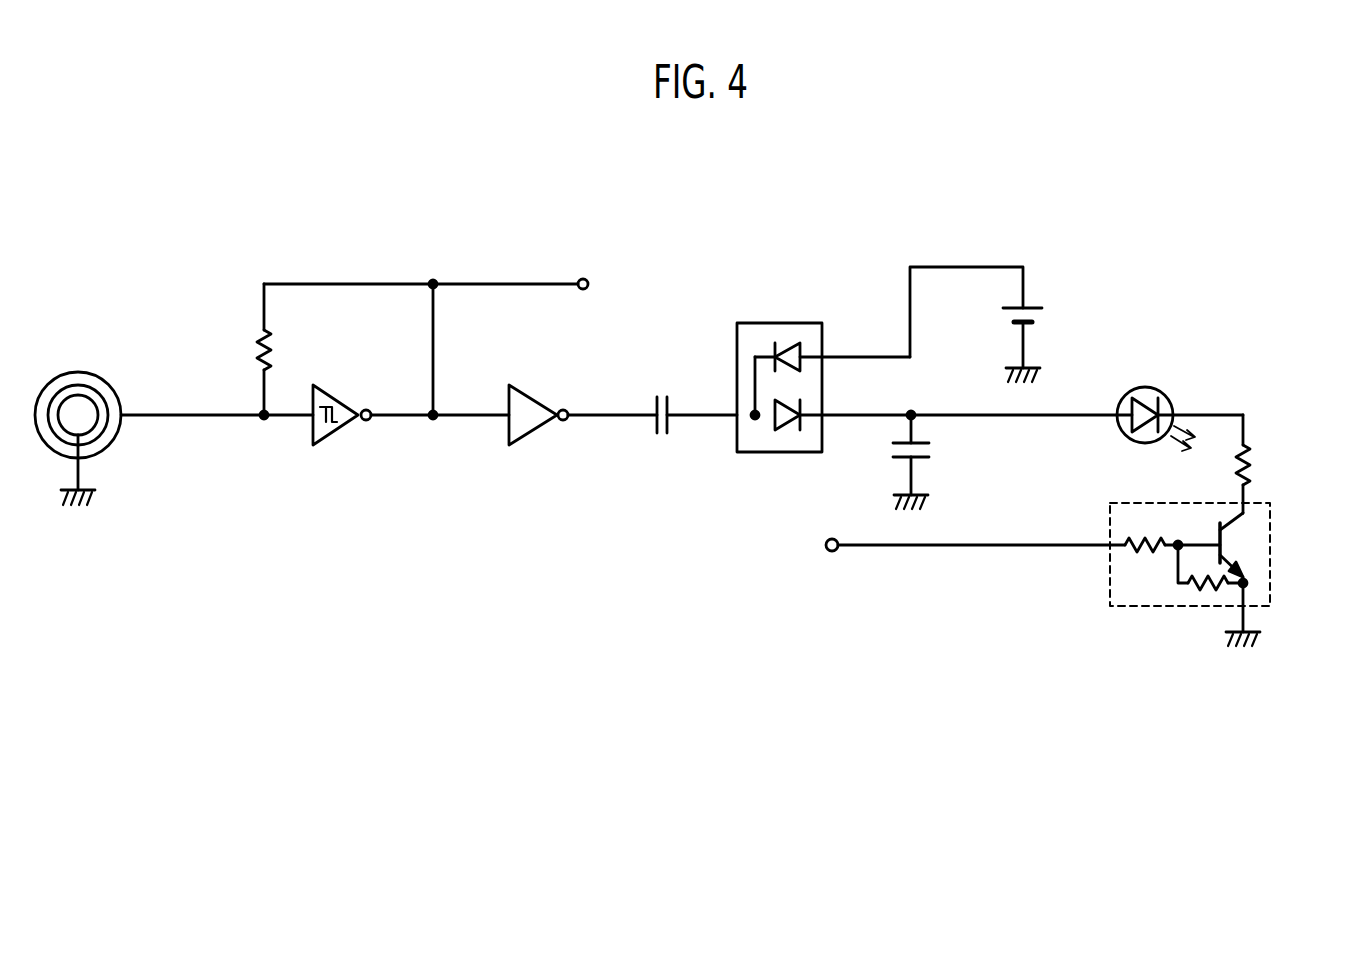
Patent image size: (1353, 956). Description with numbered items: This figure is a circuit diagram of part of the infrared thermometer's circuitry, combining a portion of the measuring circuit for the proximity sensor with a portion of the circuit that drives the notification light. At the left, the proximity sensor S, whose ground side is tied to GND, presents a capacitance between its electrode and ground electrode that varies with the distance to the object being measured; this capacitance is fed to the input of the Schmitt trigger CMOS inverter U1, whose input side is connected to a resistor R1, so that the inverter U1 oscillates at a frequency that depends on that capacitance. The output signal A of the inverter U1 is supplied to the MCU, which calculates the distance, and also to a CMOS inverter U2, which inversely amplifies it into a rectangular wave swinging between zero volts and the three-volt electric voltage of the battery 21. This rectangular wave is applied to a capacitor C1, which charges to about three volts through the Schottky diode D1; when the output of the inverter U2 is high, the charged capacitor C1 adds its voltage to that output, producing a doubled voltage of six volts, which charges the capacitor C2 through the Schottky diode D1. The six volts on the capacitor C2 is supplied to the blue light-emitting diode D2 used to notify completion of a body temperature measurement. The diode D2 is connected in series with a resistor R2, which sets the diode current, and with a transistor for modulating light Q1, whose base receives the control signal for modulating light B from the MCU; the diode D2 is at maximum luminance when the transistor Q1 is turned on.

The sensor (touch electrode) S is at (80, 376).
The ground GND is at (78, 489).
The resistor R1 is at (259, 348).
The Schmitt trigger CMOS inverter U1 is at (342, 397).
The CMOS inverter U2 is at (540, 397).
The output signal A is at (570, 268).
The capacitor C1 is at (661, 352).
The Schottky diode D1 is at (782, 323).
The battery 21 is at (1103, 319).
The capacitor C2 is at (932, 451).
The light-emitting diode D2 is at (1177, 398).
The resistor R2 is at (1250, 455).
The control signal for modulating light B is at (819, 534).
The transistor for modulating light Q1 is at (1272, 548).